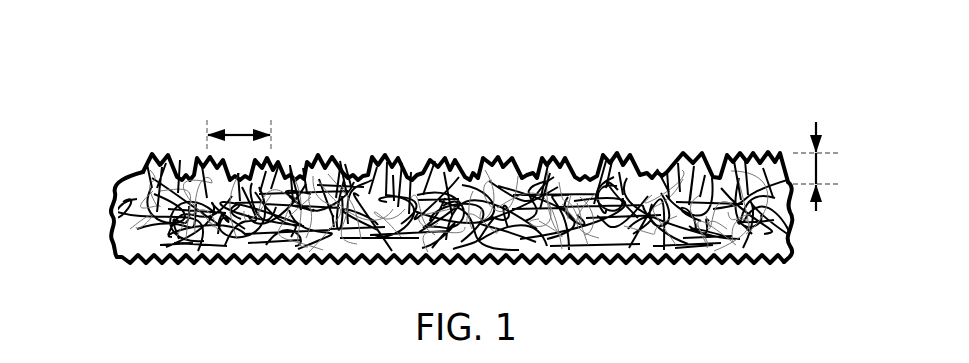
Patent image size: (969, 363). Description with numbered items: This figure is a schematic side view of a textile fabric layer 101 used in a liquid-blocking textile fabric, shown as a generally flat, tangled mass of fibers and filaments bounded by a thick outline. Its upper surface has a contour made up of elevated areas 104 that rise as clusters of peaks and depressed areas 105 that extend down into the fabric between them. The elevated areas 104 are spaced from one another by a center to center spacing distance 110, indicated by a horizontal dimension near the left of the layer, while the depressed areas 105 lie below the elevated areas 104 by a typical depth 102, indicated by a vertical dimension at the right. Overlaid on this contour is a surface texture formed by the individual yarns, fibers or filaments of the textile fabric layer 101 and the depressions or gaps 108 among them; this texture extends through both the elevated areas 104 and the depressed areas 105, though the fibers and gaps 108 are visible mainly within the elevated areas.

The textile fabric layer 101 is at (145, 49).
The typical depth 102 is at (818, 168).
The elevated areas 104 is at (497, 156).
The depressed areas 105 is at (647, 162).
The depressions or gaps 108 is at (384, 160).
The center to center spacing distance 110 is at (242, 133).